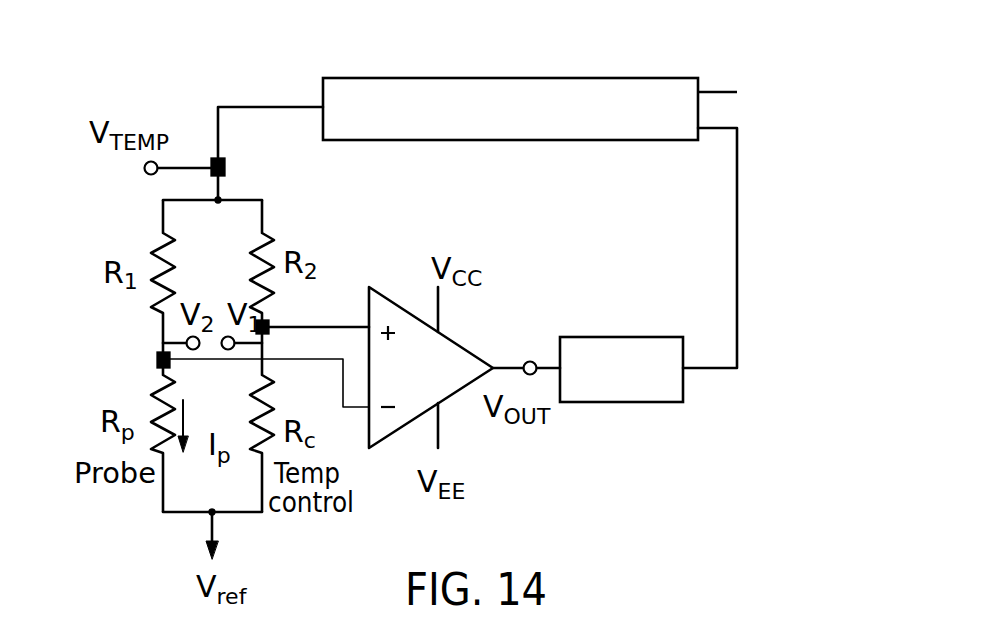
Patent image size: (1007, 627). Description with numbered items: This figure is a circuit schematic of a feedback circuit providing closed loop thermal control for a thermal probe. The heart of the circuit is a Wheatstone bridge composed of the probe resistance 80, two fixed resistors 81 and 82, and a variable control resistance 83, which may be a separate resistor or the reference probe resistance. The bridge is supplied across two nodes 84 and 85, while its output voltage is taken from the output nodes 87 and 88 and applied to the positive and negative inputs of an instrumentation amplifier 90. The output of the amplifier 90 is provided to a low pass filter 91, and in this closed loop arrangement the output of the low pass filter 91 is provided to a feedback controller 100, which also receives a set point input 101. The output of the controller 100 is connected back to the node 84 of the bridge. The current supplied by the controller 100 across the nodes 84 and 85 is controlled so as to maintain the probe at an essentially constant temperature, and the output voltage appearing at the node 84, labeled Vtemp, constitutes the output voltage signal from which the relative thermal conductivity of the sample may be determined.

The probe resistance 80 is at (155, 395).
The fixed resistor 81 is at (160, 243).
The fixed resistor 82 is at (272, 238).
The variable control resistance 83 is at (270, 380).
The node 84 is at (220, 199).
The node 85 is at (195, 513).
The output node 87 is at (157, 359).
The output node 88 is at (272, 323).
The instrumentation amplifier 90 is at (455, 340).
The low pass filter 91 is at (580, 337).
The feedback controller 100 is at (528, 140).
The set point input 101 is at (713, 92).